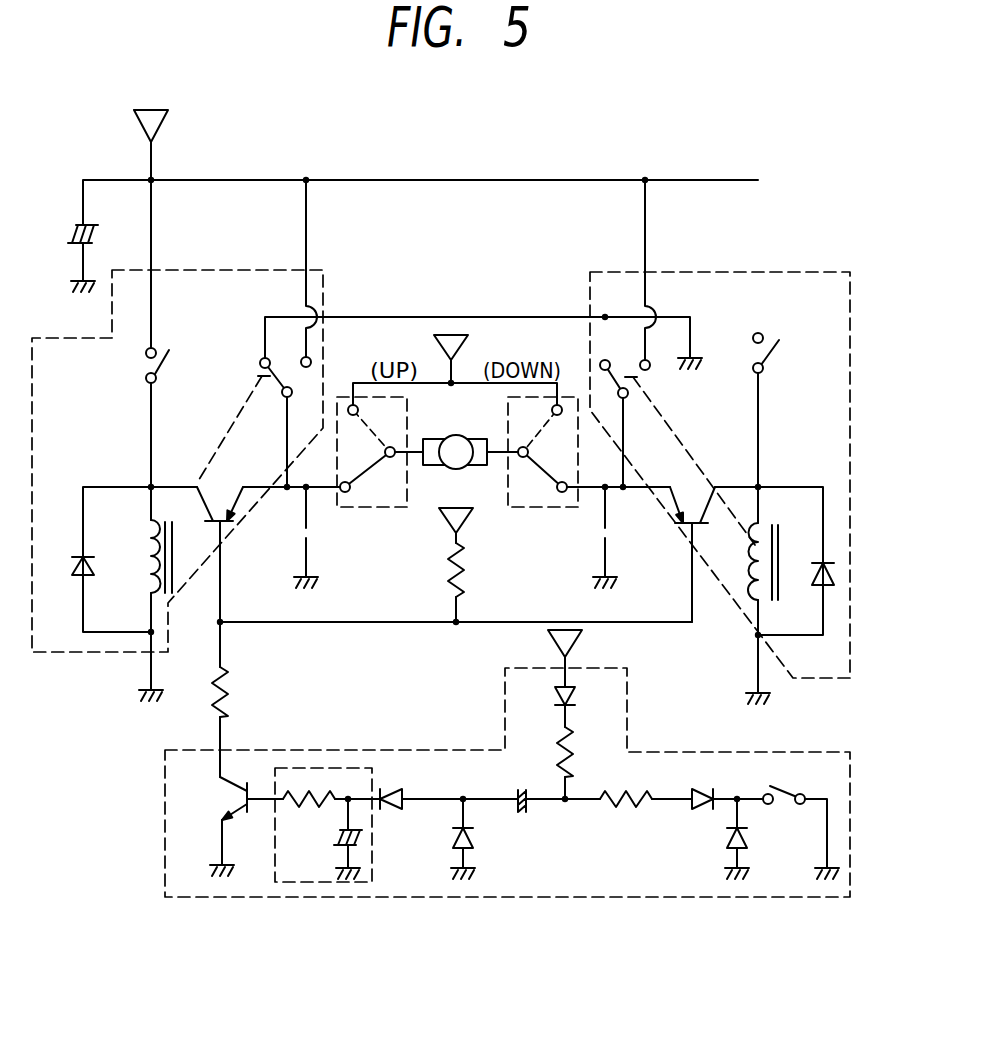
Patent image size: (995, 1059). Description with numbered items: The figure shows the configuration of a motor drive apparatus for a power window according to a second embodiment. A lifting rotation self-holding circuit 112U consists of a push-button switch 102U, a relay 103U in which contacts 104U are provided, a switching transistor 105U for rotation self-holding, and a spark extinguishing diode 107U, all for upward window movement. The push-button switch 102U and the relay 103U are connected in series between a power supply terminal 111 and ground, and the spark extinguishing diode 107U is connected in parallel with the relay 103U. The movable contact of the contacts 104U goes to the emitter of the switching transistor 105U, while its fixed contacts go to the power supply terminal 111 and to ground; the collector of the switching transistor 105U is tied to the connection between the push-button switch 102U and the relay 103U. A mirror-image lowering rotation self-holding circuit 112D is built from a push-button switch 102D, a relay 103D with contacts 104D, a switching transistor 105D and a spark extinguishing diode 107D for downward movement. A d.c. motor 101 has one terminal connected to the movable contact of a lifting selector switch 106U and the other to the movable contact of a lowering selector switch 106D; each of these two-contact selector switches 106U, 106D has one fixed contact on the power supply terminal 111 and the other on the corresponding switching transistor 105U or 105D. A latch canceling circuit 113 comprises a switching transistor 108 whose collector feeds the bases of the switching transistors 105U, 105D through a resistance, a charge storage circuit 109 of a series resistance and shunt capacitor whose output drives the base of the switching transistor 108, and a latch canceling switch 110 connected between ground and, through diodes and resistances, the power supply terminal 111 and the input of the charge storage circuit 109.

The d.c. motor 101 is at (455, 436).
The push-button switch 102U is at (146, 363).
The push-button switch 102D is at (776, 352).
The relay 103U is at (141, 560).
The relay 103D is at (784, 568).
The contacts 104U is at (261, 362).
The contacts 104D is at (624, 367).
The switching transistor 105U is at (228, 512).
The switching transistor 105D is at (695, 512).
The lifting selector switch 106U is at (362, 508).
The lowering selector switch 106D is at (553, 508).
The spark extinguishing diode 107U is at (99, 556).
The spark extinguishing diode 107D is at (812, 565).
The switching transistor 108 is at (232, 798).
The charge storage circuit 109 is at (372, 830).
The latch canceling switch 110 is at (785, 803).
The power supply terminal 111 is at (578, 640).
The lifting rotation self-holding circuit 112U is at (196, 270).
The lowering rotation self-holding circuit 112D is at (797, 270).
The latch canceling circuit 113 is at (415, 752).